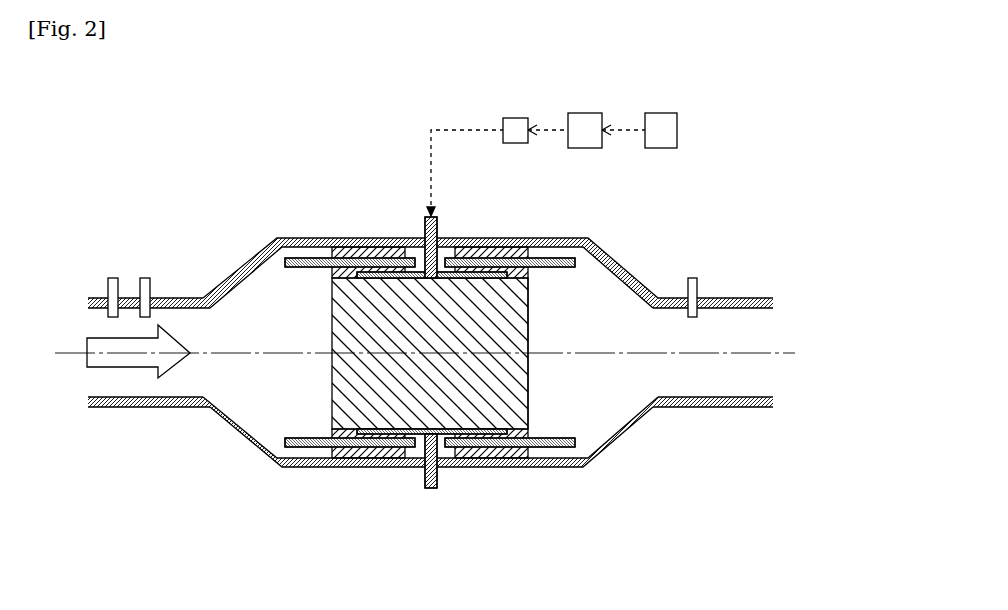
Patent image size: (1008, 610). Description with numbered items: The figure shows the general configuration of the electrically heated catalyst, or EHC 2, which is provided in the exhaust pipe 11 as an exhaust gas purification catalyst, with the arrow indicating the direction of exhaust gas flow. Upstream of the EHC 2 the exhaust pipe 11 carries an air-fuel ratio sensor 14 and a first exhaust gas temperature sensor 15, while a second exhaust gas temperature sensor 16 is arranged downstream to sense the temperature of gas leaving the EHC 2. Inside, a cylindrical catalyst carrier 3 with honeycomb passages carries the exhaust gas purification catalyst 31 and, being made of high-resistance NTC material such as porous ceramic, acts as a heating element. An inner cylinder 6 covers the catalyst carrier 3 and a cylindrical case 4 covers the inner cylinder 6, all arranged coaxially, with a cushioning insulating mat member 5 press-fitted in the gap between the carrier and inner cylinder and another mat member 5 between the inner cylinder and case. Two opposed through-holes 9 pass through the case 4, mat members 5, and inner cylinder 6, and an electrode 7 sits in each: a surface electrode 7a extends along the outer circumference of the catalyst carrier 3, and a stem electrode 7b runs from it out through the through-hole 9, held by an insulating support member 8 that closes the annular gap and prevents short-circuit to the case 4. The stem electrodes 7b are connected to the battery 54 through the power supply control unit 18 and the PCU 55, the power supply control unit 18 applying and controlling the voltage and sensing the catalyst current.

The EHC 2 is at (430, 353).
The catalyst carrier 3 is at (332, 312).
The case 4 is at (295, 238).
The mat member 5 is at (513, 270).
The inner cylinder 6 is at (303, 267).
The electrode 7 is at (421, 483).
The surface electrode 7a is at (388, 432).
The stem electrode 7b is at (425, 478).
The support member 8 is at (438, 238).
The through-hole 9 is at (420, 258).
The exhaust pipe 11 is at (176, 298).
The air-fuel ratio sensor 14 is at (107, 283).
The first exhaust gas temperature sensor 15 is at (142, 283).
The second exhaust gas temperature sensor 16 is at (686, 285).
The power supply control unit 18 is at (516, 118).
The exhaust gas purification catalyst 31 is at (530, 325).
The battery 54 is at (668, 113).
The PCU 55 is at (590, 113).